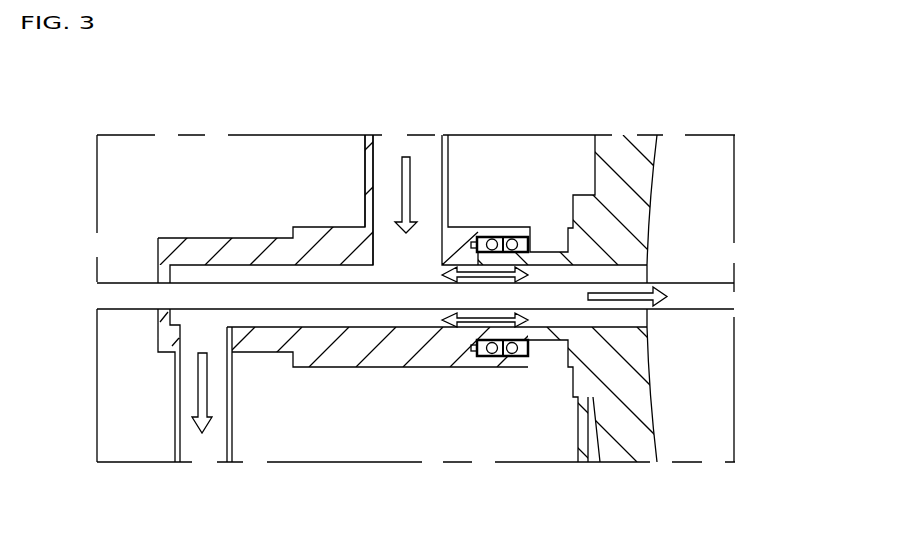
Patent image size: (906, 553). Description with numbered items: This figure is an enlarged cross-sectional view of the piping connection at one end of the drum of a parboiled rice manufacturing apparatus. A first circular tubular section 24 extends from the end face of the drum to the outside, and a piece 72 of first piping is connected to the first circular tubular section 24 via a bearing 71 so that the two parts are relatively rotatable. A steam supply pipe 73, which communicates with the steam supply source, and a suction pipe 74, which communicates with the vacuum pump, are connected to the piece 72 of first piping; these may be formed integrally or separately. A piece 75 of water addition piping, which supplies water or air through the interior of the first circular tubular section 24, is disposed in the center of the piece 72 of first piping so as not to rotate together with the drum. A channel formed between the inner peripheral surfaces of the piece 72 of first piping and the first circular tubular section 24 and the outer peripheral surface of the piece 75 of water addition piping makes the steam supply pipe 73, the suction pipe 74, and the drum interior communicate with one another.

The first circular tubular section 24 is at (537, 253).
The bearing 71 is at (502, 235).
The piece of first piping 72 is at (208, 247).
The steam supply pipe 73 is at (365, 160).
The suction pipe 74 is at (175, 413).
The piece of water addition piping 75 is at (137, 298).